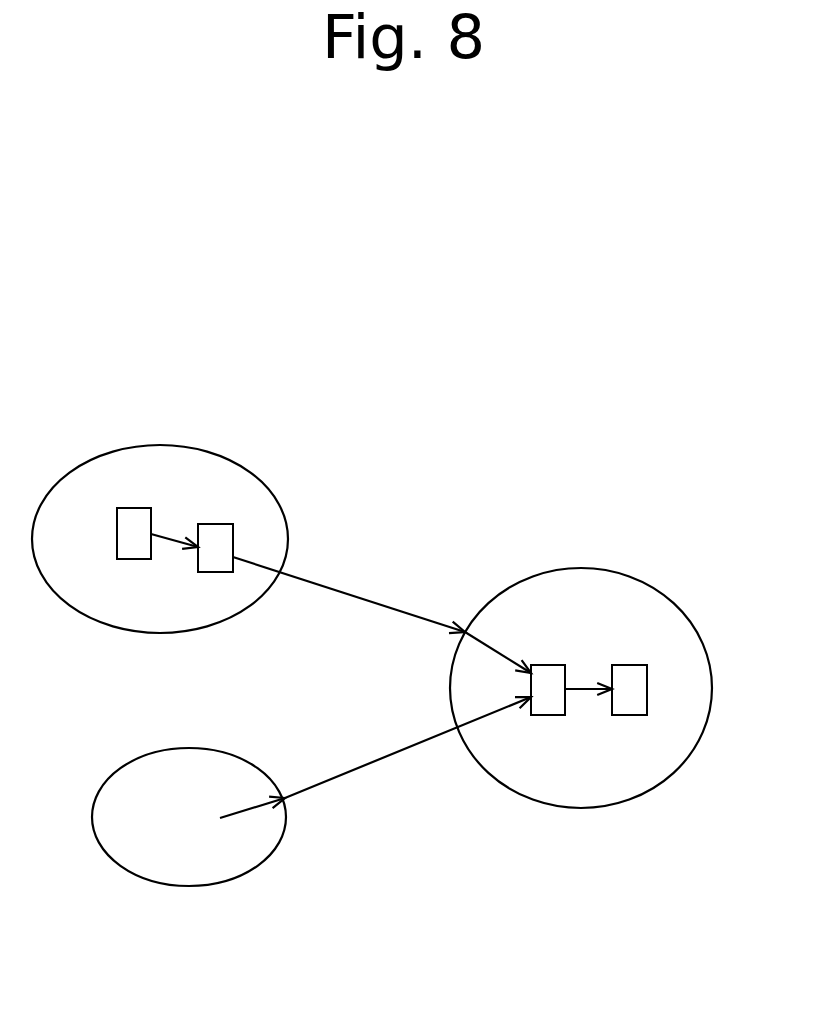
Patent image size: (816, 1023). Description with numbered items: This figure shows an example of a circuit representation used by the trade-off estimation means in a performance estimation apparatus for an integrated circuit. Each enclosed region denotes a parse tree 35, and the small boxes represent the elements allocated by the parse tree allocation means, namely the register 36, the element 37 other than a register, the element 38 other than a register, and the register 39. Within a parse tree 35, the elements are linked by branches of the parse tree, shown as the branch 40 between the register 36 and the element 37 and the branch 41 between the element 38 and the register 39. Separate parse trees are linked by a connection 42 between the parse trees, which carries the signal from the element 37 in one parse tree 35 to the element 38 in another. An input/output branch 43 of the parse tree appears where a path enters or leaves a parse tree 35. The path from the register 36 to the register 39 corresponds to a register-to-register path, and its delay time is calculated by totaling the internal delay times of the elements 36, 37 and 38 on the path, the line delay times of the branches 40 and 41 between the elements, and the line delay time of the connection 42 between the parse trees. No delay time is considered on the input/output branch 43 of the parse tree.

The parse tree 35 is at (97, 457).
The register 36 is at (133, 559).
The element other than register 37 is at (215, 567).
The element other than register 38 is at (548, 712).
The register 39 is at (630, 712).
The branch of parse tree 40 is at (170, 533).
The branch of parse tree 41 is at (582, 685).
The connection between parse trees 42 is at (355, 592).
The input/output branch of parse tree 43 is at (250, 557).